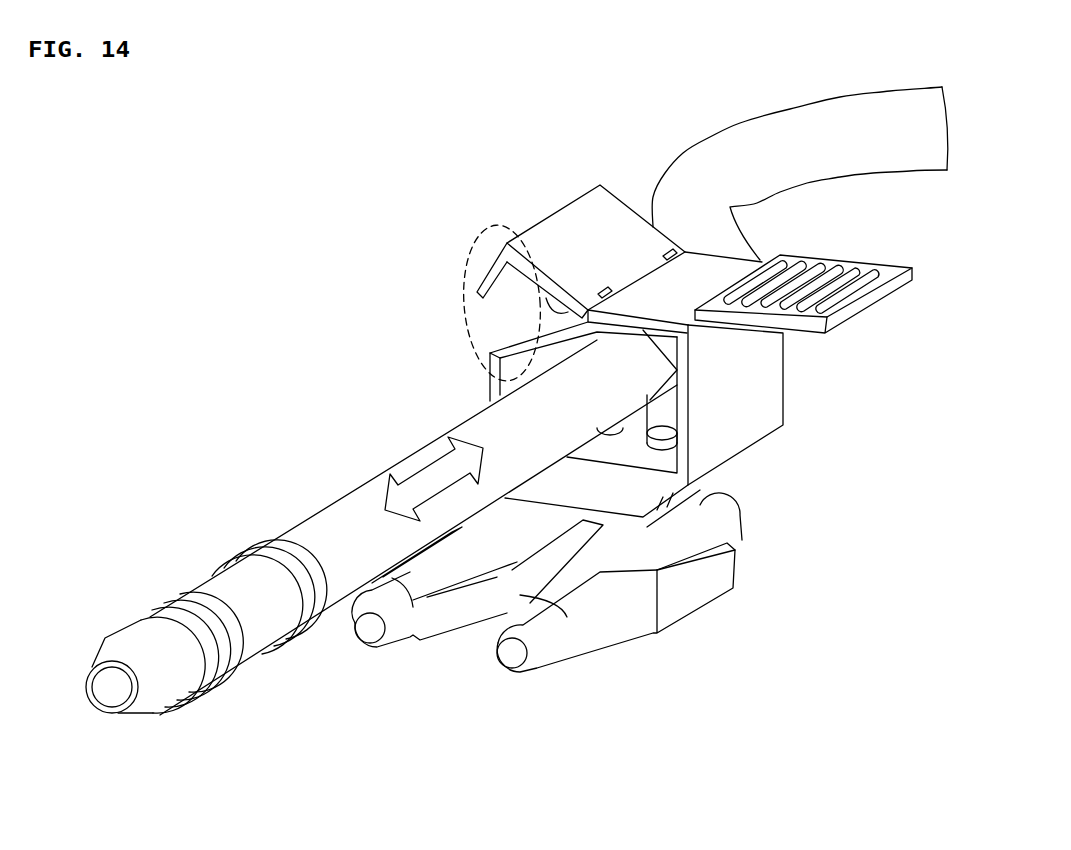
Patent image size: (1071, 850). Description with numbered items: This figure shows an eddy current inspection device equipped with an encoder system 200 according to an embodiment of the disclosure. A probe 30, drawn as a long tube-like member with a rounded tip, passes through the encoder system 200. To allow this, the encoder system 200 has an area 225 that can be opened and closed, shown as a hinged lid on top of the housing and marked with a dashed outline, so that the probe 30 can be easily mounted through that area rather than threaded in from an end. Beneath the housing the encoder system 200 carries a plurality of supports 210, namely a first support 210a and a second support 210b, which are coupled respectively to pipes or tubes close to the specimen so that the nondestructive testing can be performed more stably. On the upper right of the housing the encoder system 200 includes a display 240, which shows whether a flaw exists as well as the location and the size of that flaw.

The probe 30 is at (78, 648).
The encoder system 200 is at (775, 473).
The supports 210 is at (547, 622).
The support 210a is at (441, 625).
The support 210b is at (619, 607).
The area that can be opened and closed 225 is at (462, 300).
The display 240 is at (822, 330).